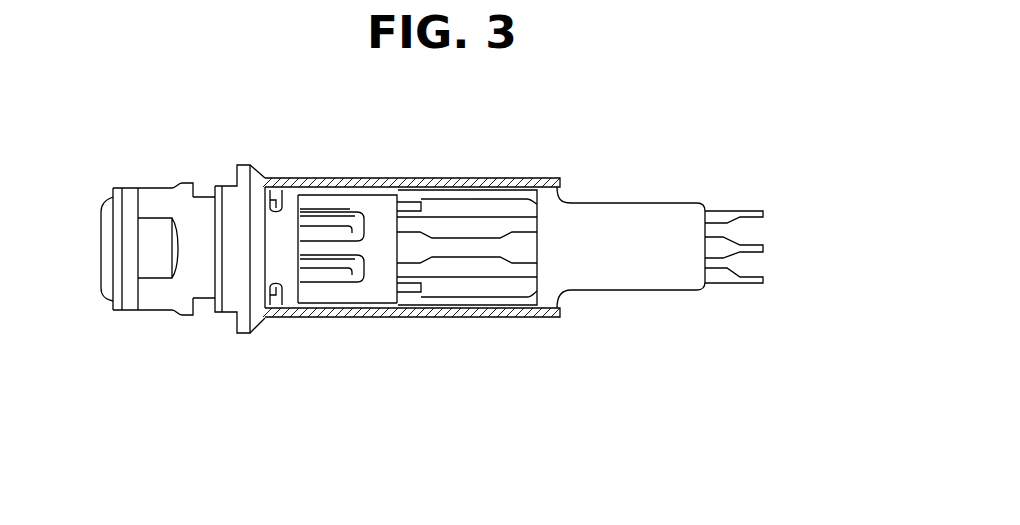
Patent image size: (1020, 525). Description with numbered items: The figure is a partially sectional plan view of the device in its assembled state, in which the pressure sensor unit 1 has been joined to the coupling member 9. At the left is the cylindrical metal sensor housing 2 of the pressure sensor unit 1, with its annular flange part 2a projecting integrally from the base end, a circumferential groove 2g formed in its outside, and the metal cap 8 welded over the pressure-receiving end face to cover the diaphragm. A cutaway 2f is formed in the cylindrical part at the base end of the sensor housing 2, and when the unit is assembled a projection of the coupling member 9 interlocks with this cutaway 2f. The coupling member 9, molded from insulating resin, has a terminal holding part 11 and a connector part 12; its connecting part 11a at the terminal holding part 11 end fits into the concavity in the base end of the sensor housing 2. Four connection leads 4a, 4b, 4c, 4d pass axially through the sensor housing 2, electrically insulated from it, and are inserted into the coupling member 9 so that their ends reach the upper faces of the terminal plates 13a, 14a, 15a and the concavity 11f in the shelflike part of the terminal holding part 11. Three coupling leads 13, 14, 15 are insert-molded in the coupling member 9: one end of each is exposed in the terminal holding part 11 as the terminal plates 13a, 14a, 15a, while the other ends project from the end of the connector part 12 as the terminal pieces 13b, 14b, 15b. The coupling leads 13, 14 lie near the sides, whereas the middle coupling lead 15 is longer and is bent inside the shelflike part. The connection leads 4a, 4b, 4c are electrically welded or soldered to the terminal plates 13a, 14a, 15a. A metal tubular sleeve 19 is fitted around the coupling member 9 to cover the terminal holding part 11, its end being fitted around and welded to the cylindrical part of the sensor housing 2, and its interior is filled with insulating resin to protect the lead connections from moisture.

The pressure sensor unit 1 is at (210, 158).
The sensor housing 2 is at (159, 195).
The annular flange part 2a is at (239, 334).
The cutaway 2f is at (281, 196).
The circumferential groove 2g is at (212, 305).
The connection lead 4a is at (338, 226).
The connection lead 4b is at (338, 270).
The connection lead 4c is at (430, 205).
The connection lead 4d is at (424, 293).
The cap 8 is at (104, 224).
The coupling member 9 is at (600, 196).
The terminal holding part 11 is at (364, 196).
The connecting part 11a is at (276, 300).
The concavity 11f is at (358, 304).
The connector part 12 is at (658, 203).
The coupling lead 13 is at (520, 199).
The terminal plate 13a is at (412, 201).
The terminal piece 13b is at (752, 211).
The coupling lead 14 is at (513, 300).
The terminal plate 14a is at (403, 306).
The terminal piece 14b is at (744, 284).
The coupling lead 15 is at (472, 238).
The terminal plate 15a is at (314, 212).
The terminal piece 15b is at (759, 246).
The sleeve 19 is at (549, 179).